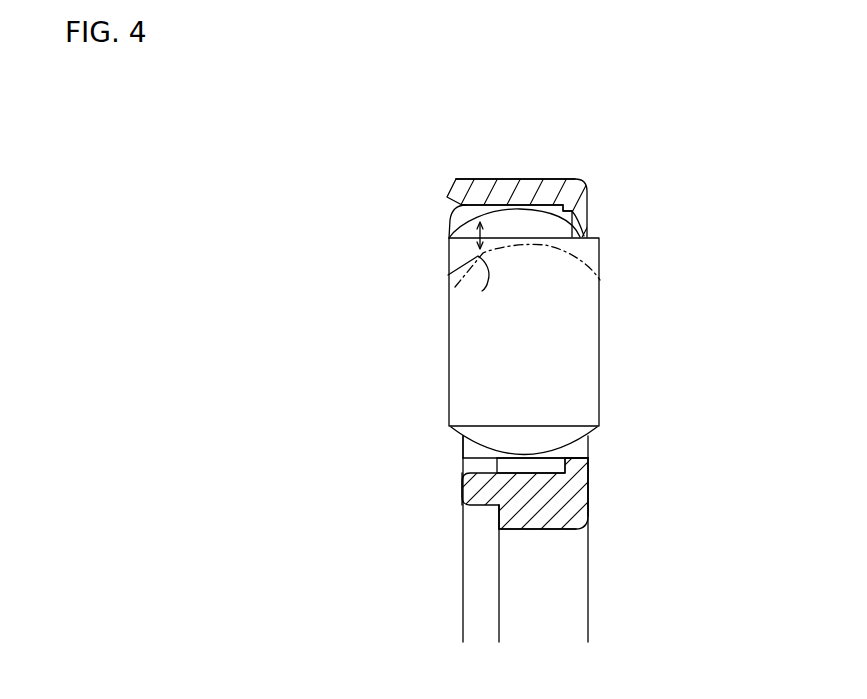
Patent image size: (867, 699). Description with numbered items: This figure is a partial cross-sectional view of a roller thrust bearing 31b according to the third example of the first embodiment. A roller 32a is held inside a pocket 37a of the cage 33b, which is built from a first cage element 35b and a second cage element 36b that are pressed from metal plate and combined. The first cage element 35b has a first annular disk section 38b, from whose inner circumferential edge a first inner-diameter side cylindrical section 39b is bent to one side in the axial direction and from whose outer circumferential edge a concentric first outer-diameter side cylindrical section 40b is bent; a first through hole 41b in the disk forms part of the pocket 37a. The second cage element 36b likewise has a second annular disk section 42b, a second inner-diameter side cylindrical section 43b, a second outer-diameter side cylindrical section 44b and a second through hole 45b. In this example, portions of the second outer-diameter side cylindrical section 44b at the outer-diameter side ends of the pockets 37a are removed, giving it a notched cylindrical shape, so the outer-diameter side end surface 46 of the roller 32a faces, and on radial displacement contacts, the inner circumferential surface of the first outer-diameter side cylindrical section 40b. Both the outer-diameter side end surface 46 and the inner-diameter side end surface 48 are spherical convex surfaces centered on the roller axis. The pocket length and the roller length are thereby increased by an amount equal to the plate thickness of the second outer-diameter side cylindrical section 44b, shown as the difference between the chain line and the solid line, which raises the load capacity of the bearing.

The roller thrust bearing 31b is at (613, 295).
The roller 32a is at (583, 380).
The cage 33b is at (550, 179).
The first cage element 35b is at (578, 213).
The second cage element 36b is at (477, 490).
The pocket 37a is at (570, 452).
The first annular disk section 38b is at (578, 482).
The first inner-diameter side cylindrical section 39b is at (537, 520).
The first outer-diameter side cylindrical section 40b is at (477, 179).
The first through hole 41b is at (585, 237).
The second annular disk section 42b is at (465, 479).
The second inner-diameter side cylindrical section 43b is at (508, 512).
The second outer-diameter side cylindrical section 44b is at (490, 179).
The second through hole 45b is at (468, 447).
The outer-diameter side end surface 46 is at (455, 232).
The inner-diameter side end surface 48 is at (540, 458).